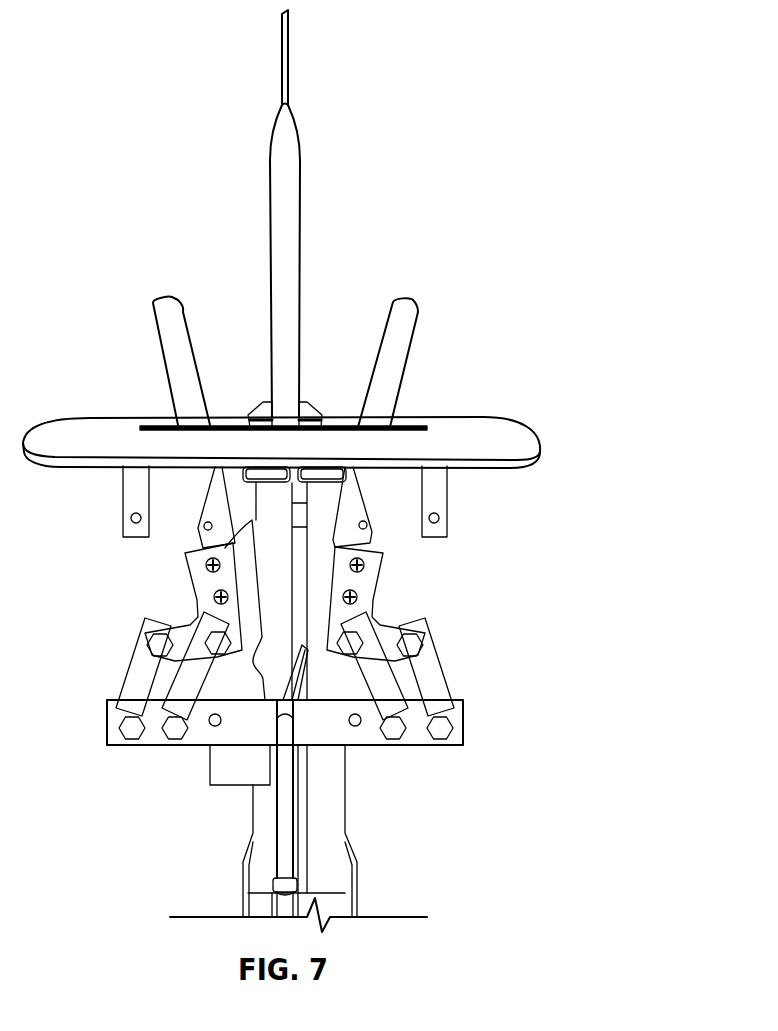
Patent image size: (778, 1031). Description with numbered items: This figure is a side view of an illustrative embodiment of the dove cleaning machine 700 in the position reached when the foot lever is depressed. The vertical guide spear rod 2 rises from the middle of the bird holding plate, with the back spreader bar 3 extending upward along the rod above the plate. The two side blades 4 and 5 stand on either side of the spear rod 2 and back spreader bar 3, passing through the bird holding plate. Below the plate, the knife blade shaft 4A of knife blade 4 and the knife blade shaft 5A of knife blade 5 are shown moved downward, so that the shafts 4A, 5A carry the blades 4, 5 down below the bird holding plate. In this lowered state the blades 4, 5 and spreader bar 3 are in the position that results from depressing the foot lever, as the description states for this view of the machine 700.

The dove cleaning machine 700 is at (372, 95).
The vertical guide spear rod 2 is at (283, 50).
The back spreader bar 3 is at (289, 192).
The side blade 4 is at (177, 375).
The side blade 5 is at (392, 348).
The knife blade shaft 4A is at (215, 475).
The knife blade shaft 5A is at (352, 477).